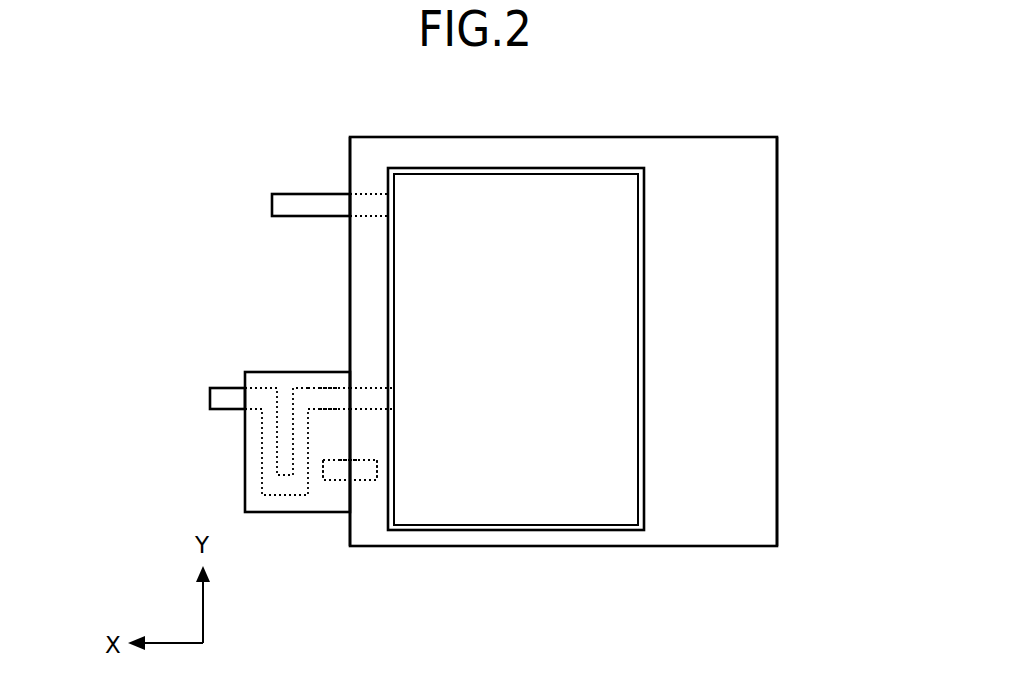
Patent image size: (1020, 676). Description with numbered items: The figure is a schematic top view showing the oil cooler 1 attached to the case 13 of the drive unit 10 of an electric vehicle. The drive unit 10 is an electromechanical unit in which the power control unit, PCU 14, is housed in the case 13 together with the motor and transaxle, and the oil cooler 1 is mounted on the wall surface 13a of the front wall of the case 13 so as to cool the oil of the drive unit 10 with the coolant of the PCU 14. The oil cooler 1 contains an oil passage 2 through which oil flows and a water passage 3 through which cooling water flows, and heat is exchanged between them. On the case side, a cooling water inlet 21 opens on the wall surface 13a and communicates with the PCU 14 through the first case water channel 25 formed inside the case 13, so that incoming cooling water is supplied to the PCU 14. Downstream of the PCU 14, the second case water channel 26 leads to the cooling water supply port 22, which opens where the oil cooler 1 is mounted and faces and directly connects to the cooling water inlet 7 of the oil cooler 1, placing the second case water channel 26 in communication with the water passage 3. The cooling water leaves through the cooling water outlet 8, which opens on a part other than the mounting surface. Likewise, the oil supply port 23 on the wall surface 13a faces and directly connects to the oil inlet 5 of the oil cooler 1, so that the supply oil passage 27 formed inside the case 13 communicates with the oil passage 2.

The oil cooler 1 is at (236, 369).
The oil passage 2 is at (324, 474).
The water passage 3 is at (293, 388).
The oil inlet 5 is at (348, 469).
The cooling water inlet 7 is at (330, 393).
The cooling water outlet 8 is at (210, 395).
The drive unit 10 is at (672, 132).
The case 13 is at (763, 366).
The wall surface 13a is at (350, 250).
The power control unit (PCU) 14 is at (532, 185).
The cooling water inlet 21 is at (272, 202).
The cooling water supply port 22 is at (330, 393).
The oil supply port 23 is at (348, 469).
The first case water channel 25 is at (373, 194).
The second case water channel 26 is at (377, 388).
The supply oil passage 27 is at (377, 472).